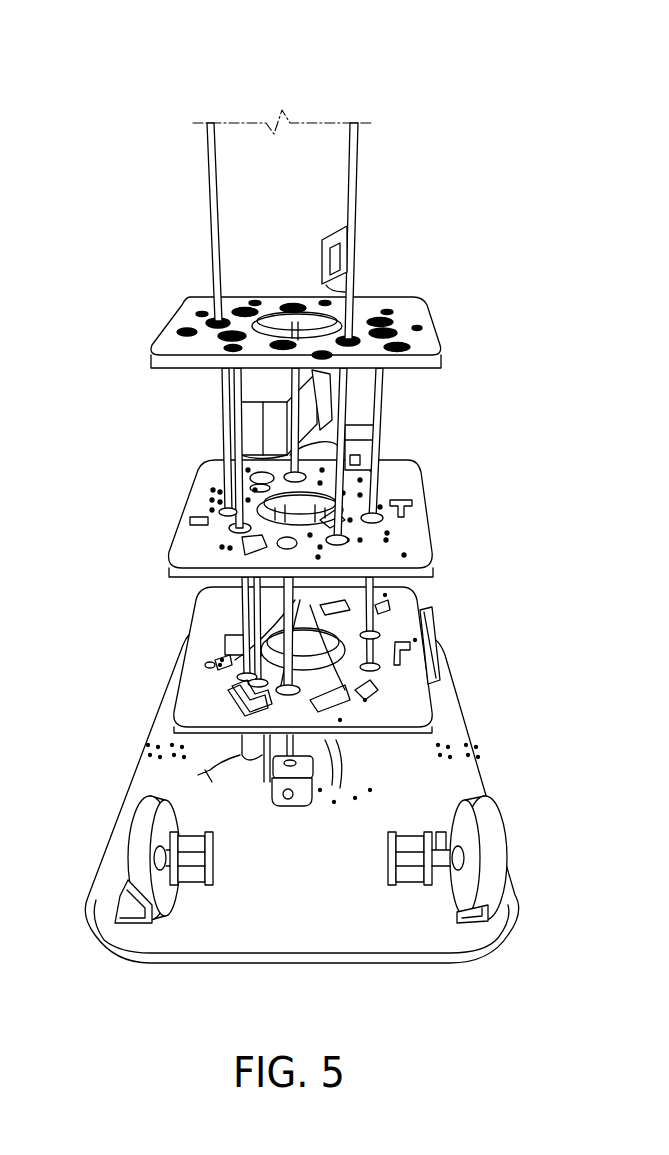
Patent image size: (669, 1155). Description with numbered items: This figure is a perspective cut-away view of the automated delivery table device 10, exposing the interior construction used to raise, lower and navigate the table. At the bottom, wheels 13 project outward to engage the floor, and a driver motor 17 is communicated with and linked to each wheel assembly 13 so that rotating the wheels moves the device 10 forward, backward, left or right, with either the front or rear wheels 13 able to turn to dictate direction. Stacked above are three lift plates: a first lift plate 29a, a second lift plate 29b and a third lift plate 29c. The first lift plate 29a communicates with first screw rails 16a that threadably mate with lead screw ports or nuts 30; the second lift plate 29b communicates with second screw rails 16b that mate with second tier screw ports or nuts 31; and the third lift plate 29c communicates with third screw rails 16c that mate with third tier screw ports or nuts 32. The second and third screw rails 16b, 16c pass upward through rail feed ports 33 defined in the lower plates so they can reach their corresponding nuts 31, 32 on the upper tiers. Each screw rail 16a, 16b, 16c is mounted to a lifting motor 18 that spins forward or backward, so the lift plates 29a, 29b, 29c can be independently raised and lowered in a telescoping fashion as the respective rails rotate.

The automated delivery table device 10 is at (135, 63).
The wheels 13 is at (131, 826).
The first screw rails 16a is at (240, 592).
The second screw rails 16b is at (222, 427).
The third screw rails 16c is at (207, 133).
The driver motor 17 is at (192, 886).
The lifting motor 18 is at (318, 789).
The first lift plate 29a is at (412, 655).
The second lift plate 29b is at (435, 500).
The third lift plate 29c is at (440, 334).
The lead screw ports or nuts 30 is at (265, 700).
The second tier screw ports or nuts 31 is at (215, 527).
The third tier screw ports or nuts 32 is at (190, 316).
The rail feed ports 33 is at (210, 495).